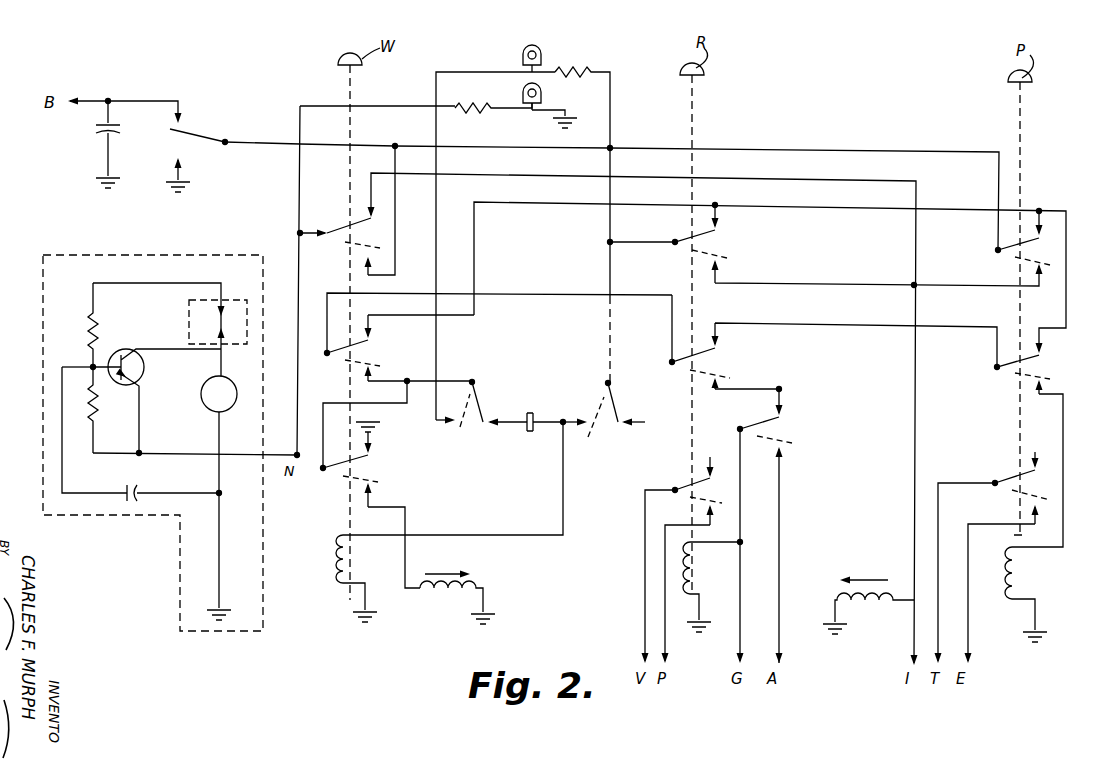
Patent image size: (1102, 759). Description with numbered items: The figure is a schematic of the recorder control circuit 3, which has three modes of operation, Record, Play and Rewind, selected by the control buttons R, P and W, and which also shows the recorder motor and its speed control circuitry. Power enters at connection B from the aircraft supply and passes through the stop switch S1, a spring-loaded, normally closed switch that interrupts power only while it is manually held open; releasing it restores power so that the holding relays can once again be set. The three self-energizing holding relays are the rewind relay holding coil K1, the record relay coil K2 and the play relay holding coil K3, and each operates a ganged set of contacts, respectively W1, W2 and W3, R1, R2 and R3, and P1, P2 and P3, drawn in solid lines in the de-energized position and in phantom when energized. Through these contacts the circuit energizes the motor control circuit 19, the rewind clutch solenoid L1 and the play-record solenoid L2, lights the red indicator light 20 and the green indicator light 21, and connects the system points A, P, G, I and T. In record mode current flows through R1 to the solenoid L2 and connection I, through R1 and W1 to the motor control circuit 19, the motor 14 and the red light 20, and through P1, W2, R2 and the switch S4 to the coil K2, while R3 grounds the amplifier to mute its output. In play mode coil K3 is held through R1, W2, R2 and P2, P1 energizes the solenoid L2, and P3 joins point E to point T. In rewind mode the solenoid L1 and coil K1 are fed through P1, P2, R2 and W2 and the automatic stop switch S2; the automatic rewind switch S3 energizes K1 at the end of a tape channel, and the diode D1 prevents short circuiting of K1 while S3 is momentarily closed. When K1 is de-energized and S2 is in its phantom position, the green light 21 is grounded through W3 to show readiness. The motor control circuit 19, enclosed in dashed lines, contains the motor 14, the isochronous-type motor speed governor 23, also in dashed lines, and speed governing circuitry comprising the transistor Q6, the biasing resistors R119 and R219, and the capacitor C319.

The recorder control circuit 3 is at (324, 638).
The motor 14 is at (206, 383).
The motor control circuit 19 is at (78, 240).
The red indicator light 20 is at (545, 95).
The green indicator light 21 is at (543, 52).
The isochronous-type motor speed governor 23 is at (250, 283).
The stop switch S1 is at (168, 146).
The automatic stop switch S2 is at (480, 400).
The automatic rewind switch S3 is at (613, 400).
The switch S4 is at (765, 540).
The diode D1 is at (545, 392).
The rewind relay contacts W1 is at (347, 210).
The rewind relay contacts W2 is at (499, 338).
The rewind relay contacts W3 is at (371, 484).
The record relay contacts R1 is at (825, 258).
The record relay contacts R2 is at (834, 355).
The record relay contacts R3 is at (682, 560).
The play relay contacts P1 is at (1026, 251).
The play relay contacts P2 is at (1029, 451).
The play relay contacts P3 is at (995, 557).
The rewind relay holding coil K1 is at (449, 522).
The record relay coil K2 is at (711, 587).
The play relay holding coil K3 is at (1030, 594).
The rewind clutch solenoid L1 is at (457, 588).
The play-record solenoid L2 is at (868, 595).
The transistor Q6 is at (146, 327).
The biasing resistor R119 is at (90, 330).
The biasing resistor R219 is at (120, 412).
The capacitor C319 is at (136, 490).